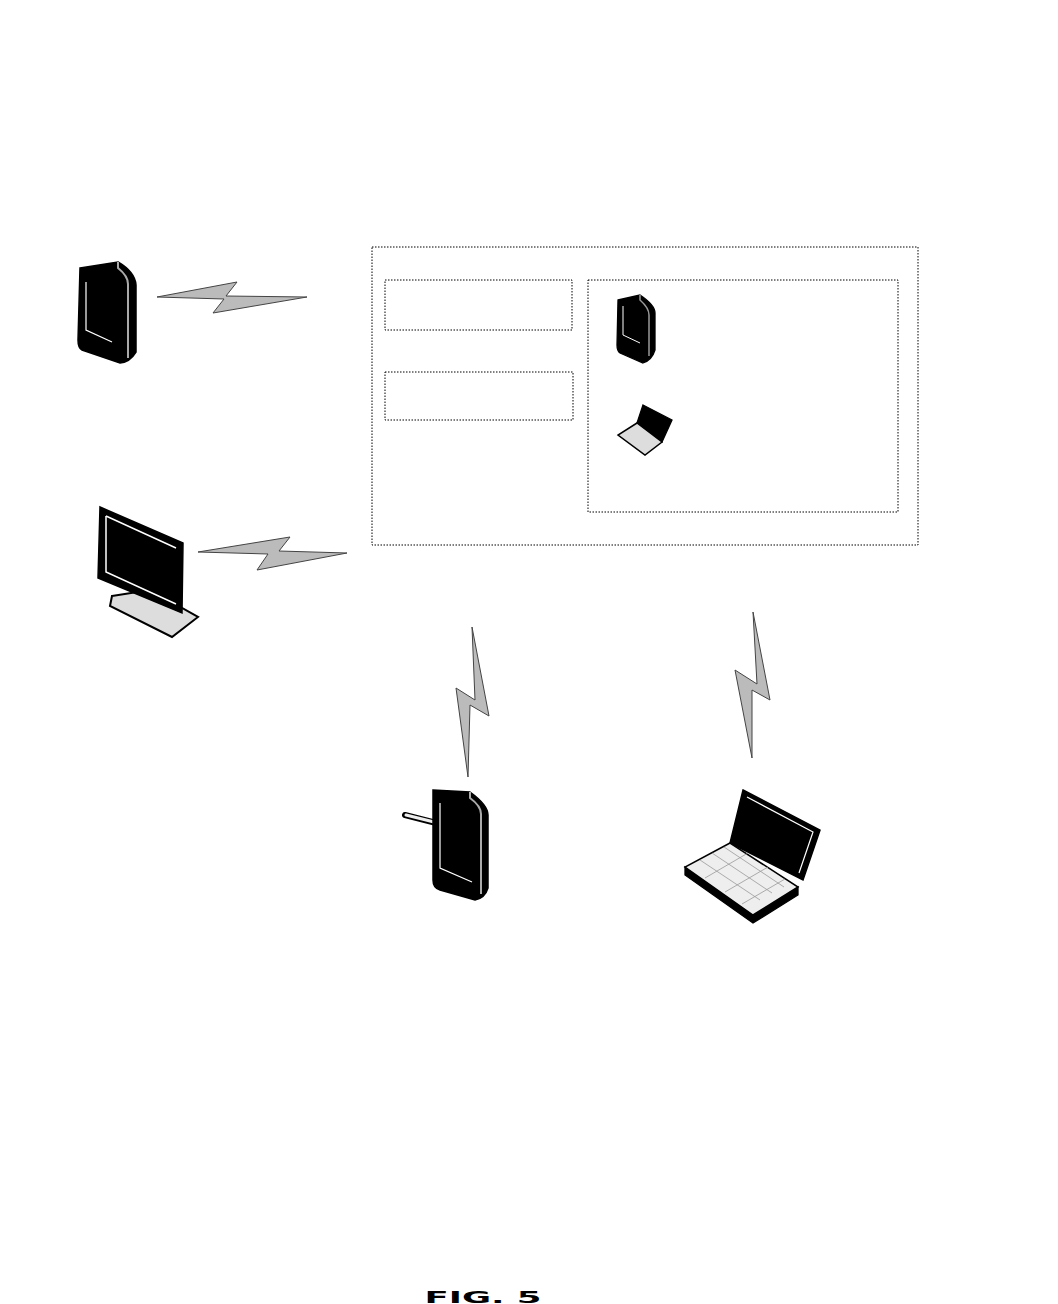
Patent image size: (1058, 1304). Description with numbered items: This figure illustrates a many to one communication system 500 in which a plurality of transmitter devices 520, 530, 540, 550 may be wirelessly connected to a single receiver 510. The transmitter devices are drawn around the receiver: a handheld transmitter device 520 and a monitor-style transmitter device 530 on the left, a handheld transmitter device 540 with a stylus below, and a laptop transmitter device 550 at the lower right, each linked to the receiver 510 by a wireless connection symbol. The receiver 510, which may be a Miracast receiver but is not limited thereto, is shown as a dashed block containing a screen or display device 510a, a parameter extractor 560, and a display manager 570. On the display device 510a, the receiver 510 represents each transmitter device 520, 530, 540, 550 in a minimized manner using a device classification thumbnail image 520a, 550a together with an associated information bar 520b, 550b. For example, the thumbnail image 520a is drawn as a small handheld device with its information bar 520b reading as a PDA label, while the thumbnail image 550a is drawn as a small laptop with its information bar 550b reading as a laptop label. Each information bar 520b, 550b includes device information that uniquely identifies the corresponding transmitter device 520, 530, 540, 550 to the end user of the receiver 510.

The many to one communication system 500 is at (564, 115).
The receiver 510 is at (645, 247).
The display device 510a is at (720, 280).
The transmitter device 520 is at (132, 263).
The device classification thumbnail image 520a is at (615, 298).
The information bar 520b is at (612, 370).
The transmitter device 530 is at (192, 637).
The transmitter device 540 is at (435, 883).
The transmitter device 550 is at (695, 892).
The device classification thumbnail image 550a is at (618, 438).
The information bar 550b is at (670, 497).
The parameter extractor 560 is at (385, 303).
The display manager 570 is at (387, 397).